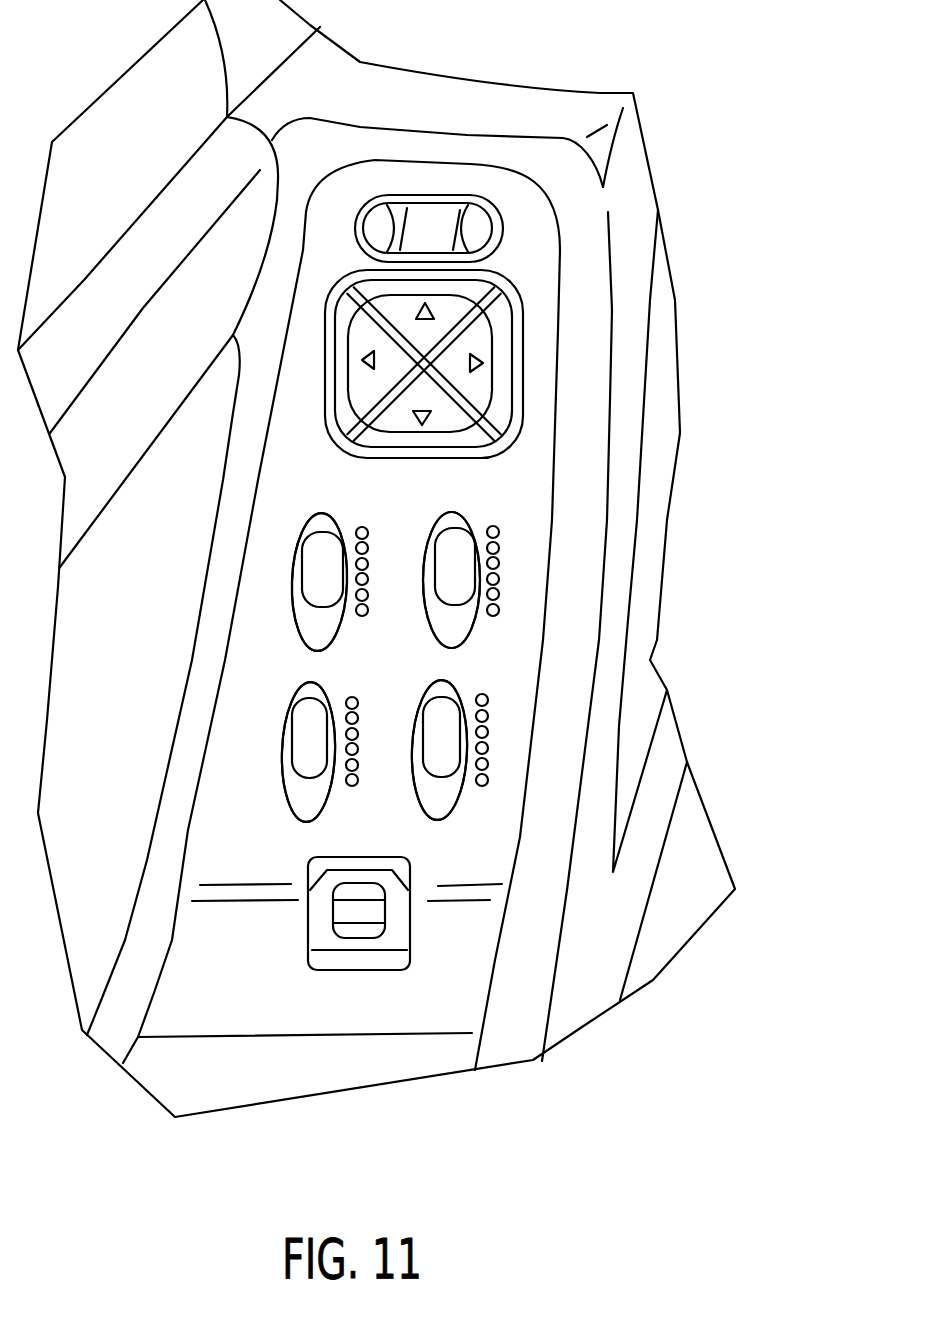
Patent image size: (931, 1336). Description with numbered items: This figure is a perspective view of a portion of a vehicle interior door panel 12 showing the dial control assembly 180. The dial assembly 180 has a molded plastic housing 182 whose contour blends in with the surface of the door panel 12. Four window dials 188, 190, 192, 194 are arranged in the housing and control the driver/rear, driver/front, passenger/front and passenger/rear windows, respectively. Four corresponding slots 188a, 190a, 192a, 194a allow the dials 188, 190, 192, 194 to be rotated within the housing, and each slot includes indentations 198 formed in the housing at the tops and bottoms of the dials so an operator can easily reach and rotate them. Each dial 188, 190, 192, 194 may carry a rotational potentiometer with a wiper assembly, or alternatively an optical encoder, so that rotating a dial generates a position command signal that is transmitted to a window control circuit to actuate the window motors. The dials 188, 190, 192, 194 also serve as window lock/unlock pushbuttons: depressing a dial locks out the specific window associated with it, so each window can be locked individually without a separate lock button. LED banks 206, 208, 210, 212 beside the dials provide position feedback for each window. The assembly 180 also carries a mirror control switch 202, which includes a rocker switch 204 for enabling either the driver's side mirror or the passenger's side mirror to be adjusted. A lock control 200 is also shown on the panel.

The dial control assembly 180 is at (662, 68).
The door panel 12 is at (617, 523).
The molded plastic housing 182 is at (337, 208).
The rocker switch 204 is at (482, 212).
The mirror control switch 202 is at (508, 317).
The indentations 198 is at (322, 518).
The window dial 188 is at (320, 545).
The slot 188a is at (307, 615).
The window dial 190 is at (450, 545).
The slot 190a is at (457, 613).
The window dial 192 is at (290, 737).
The slot 192a is at (290, 799).
The window dial 194 is at (427, 756).
The slot 194a is at (455, 785).
The LED bank 206 is at (358, 526).
The LED bank 208 is at (512, 573).
The LED bank 210 is at (377, 753).
The LED bank 212 is at (500, 724).
The lock button 200 is at (307, 955).